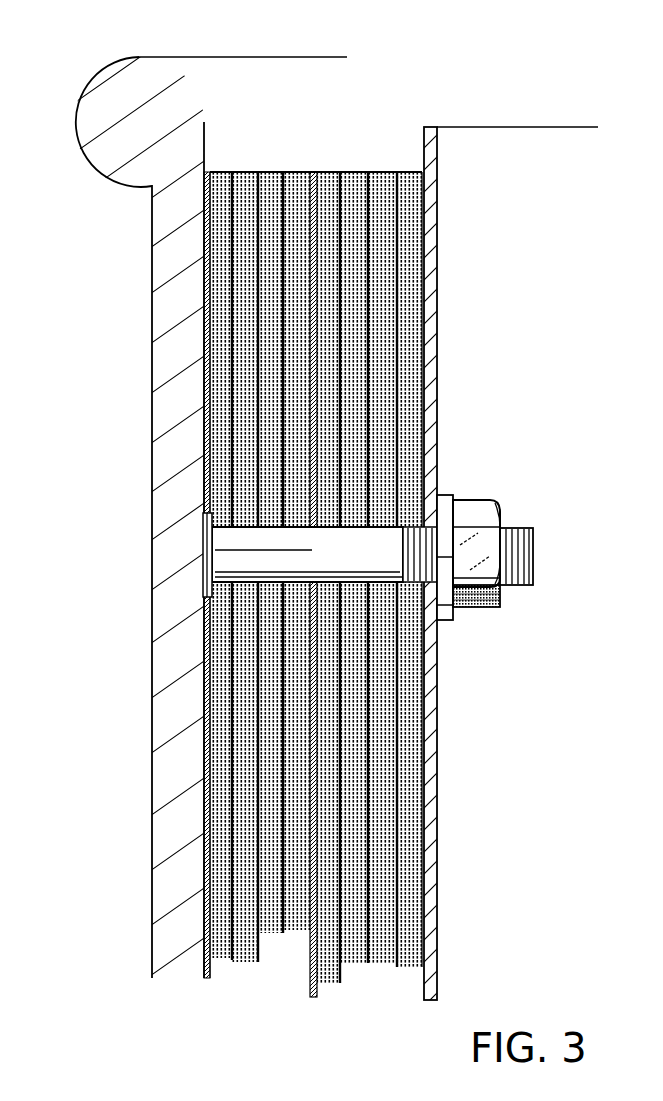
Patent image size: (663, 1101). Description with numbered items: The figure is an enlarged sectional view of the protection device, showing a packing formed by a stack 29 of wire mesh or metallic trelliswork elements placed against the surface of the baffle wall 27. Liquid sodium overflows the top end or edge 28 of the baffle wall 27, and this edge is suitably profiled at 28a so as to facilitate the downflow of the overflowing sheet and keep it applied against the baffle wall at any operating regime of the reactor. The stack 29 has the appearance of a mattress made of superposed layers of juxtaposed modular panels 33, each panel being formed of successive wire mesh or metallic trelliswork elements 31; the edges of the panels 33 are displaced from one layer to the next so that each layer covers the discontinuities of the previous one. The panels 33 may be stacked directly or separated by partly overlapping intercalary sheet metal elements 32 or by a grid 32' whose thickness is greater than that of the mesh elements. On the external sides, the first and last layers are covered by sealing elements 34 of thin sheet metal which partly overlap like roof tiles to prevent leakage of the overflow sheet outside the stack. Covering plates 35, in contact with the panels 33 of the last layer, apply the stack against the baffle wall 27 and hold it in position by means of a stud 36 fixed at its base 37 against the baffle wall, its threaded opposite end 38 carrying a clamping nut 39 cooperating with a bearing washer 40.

The baffle wall 27 is at (173, 438).
The top end or edge 28 is at (110, 63).
The profiled portion 28a is at (107, 146).
The stack 29 is at (407, 95).
The wire mesh or metallic trelliswork elements 31 is at (213, 308).
The intercalary sheet metal elements 32 is at (269, 159).
The grid 32' is at (344, 551).
The modular panels 33 is at (288, 935).
The sealing elements 34 is at (423, 173).
The covering plates 35 is at (432, 345).
The stud 36 is at (243, 559).
The base 37 is at (210, 542).
The threaded opposite end 38 is at (533, 543).
The clamping nut 39 is at (470, 608).
The bearing washer 40 is at (446, 505).